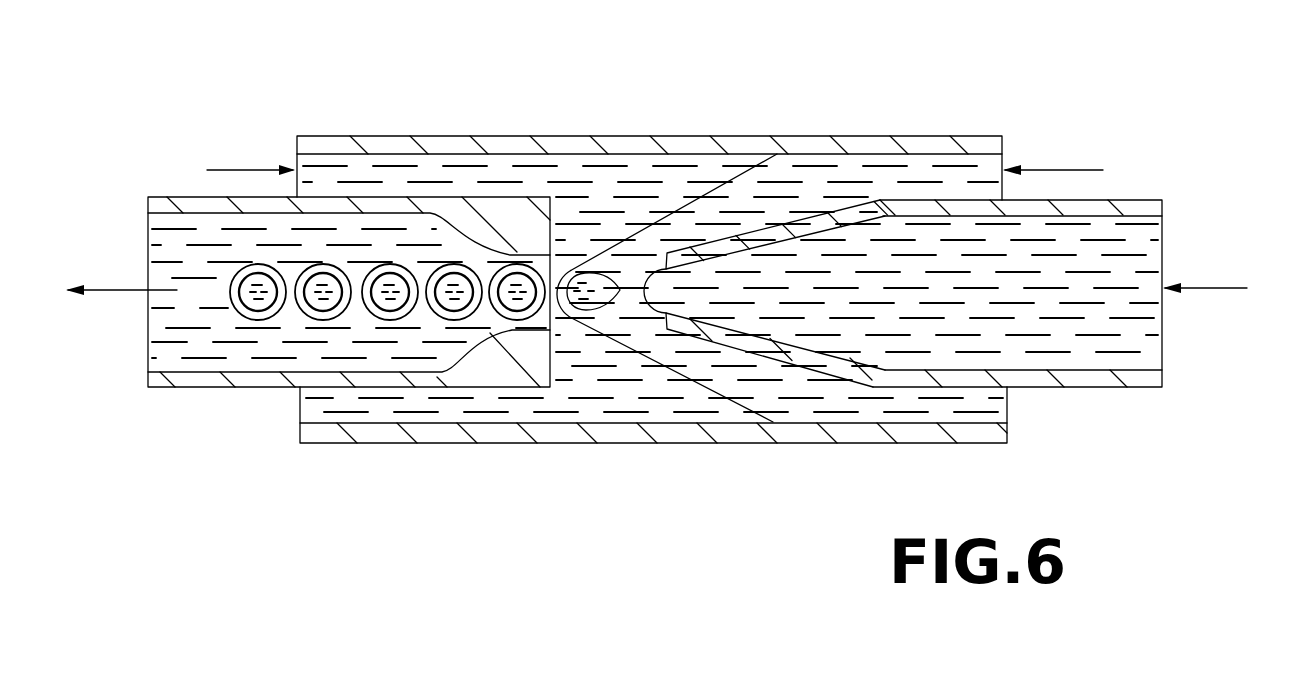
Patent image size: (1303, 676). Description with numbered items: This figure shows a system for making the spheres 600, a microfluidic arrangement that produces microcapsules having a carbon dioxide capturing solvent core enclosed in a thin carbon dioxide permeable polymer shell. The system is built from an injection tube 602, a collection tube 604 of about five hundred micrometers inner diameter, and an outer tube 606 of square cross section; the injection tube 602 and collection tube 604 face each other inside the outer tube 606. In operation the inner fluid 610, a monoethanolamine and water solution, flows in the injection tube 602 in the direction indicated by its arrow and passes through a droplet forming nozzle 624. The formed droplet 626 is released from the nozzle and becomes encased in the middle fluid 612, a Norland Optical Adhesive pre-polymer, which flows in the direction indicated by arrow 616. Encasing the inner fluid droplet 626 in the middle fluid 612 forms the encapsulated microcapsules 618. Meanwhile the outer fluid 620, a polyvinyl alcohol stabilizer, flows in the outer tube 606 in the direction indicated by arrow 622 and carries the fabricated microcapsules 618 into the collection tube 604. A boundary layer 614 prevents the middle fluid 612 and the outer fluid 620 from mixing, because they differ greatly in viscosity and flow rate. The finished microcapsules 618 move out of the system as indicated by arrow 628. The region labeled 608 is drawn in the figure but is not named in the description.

The system for making the spheres 600 is at (1010, 61).
The injection tube 602 is at (1128, 200).
The collection tube 604 is at (268, 390).
The outer tube 606 is at (455, 445).
The adhesive fill cavity 608 is at (1137, 352).
The inner fluid 610 is at (1200, 287).
The middle fluid 612 is at (817, 182).
The boundary layer 614 is at (693, 373).
The arrow 616 is at (1052, 165).
The encapsulated microcapsules 618 is at (334, 266).
The outer fluid 620 is at (507, 178).
The arrow 622 is at (243, 170).
The droplet forming nozzle 624 is at (677, 250).
The formed droplet 626 is at (597, 295).
The arrow 628 is at (123, 290).